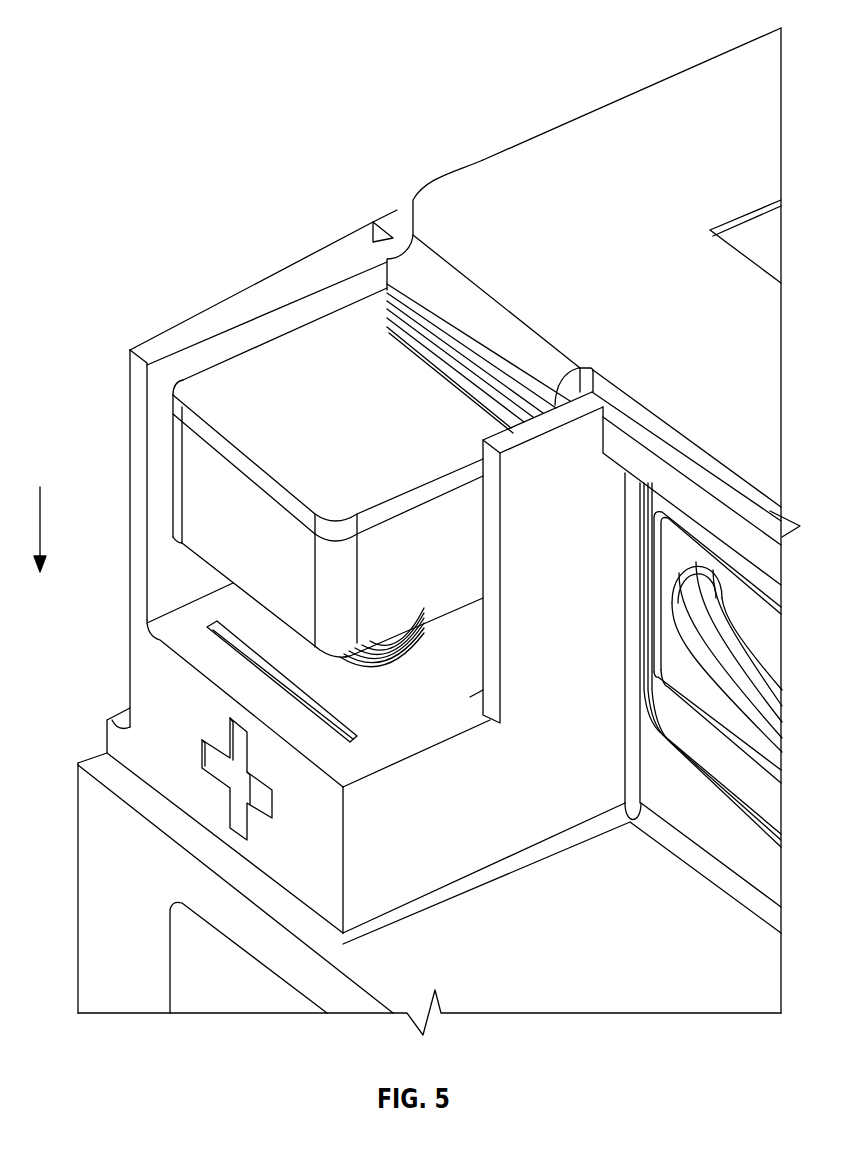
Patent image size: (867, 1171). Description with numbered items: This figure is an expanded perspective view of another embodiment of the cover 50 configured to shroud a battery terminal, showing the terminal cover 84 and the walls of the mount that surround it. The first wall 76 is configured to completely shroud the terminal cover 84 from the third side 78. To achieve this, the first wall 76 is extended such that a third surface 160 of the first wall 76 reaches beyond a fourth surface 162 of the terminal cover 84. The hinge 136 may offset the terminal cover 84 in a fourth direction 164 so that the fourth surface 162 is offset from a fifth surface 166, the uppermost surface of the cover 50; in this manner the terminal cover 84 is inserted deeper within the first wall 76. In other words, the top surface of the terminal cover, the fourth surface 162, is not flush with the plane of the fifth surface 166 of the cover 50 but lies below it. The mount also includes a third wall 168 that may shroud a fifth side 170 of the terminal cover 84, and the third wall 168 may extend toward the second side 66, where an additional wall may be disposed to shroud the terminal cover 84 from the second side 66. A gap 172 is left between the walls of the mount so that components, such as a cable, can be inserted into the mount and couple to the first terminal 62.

The cover 50 is at (617, 135).
The fifth surface 166 is at (497, 175).
The hinge 136 is at (490, 330).
The third surface 160 is at (297, 283).
The fourth surface 162 is at (260, 387).
The terminal cover 84 is at (200, 484).
The first wall 76 is at (140, 413).
The fourth direction 164 is at (40, 513).
The third side 78 is at (115, 672).
The gap 172 is at (393, 750).
The first terminal 62 is at (420, 660).
The fifth side 170 is at (480, 895).
The third wall 168 is at (555, 797).
The second side 66 is at (135, 992).